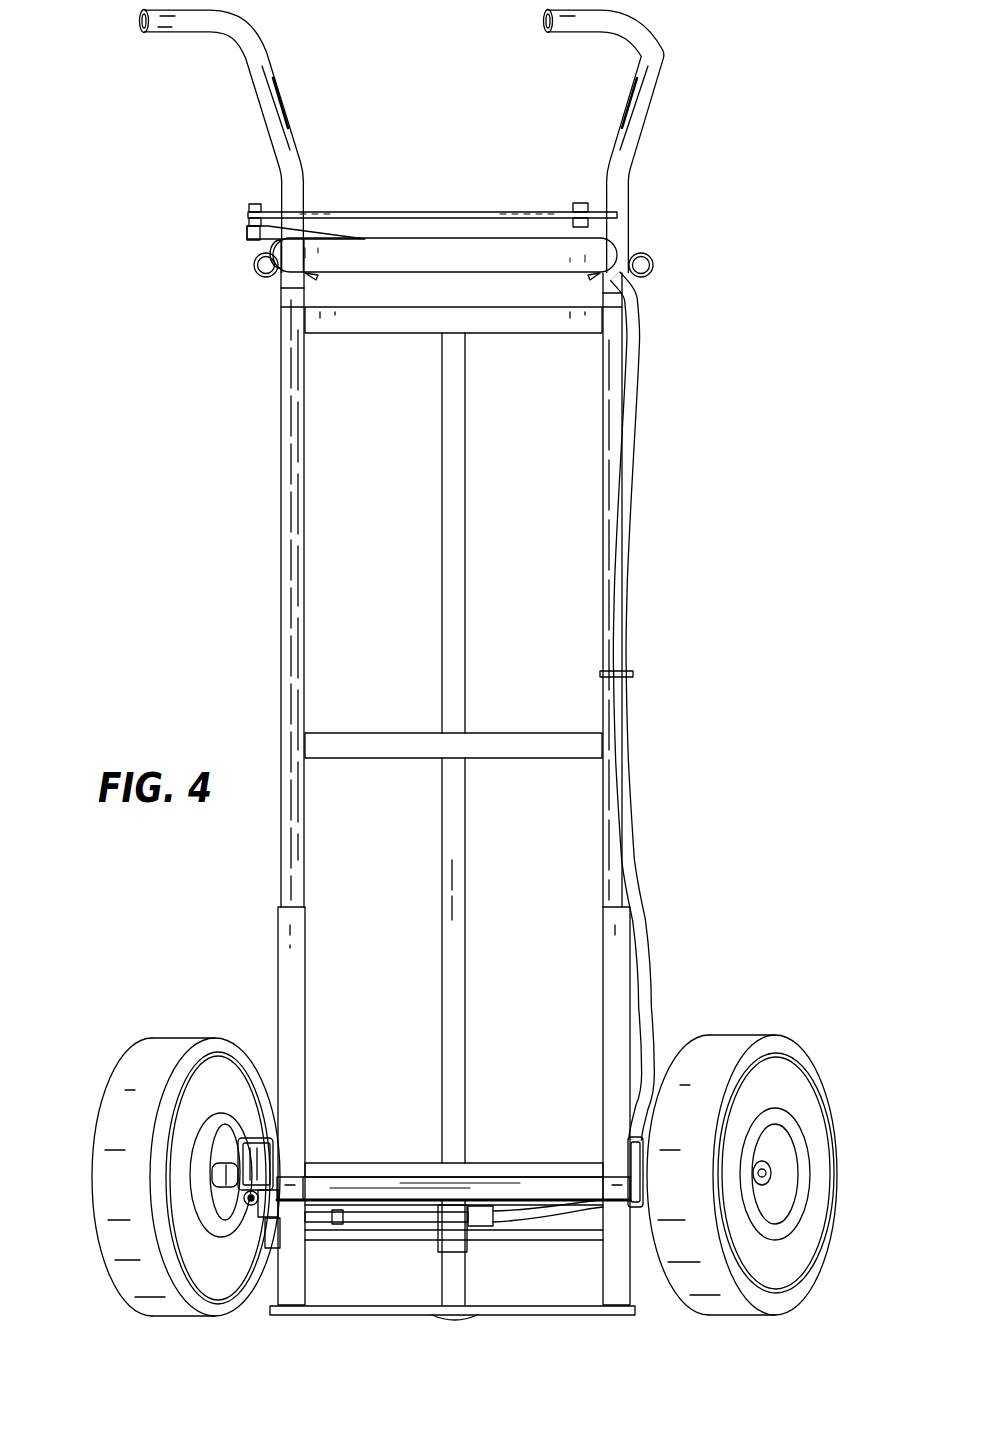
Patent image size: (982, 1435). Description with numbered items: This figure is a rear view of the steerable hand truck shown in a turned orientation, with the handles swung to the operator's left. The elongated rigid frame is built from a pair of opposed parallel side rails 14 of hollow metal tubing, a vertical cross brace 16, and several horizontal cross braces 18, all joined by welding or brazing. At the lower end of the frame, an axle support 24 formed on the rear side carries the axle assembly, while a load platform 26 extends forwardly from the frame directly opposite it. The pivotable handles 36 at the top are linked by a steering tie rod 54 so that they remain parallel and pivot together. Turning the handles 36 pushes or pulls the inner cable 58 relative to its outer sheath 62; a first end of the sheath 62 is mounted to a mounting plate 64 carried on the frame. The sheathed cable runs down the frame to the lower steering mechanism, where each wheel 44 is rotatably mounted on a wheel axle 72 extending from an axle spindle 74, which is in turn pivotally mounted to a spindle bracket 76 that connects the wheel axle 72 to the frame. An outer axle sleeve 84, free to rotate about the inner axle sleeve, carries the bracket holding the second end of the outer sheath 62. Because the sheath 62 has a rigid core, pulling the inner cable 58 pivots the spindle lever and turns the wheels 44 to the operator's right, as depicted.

The side rails 14 is at (610, 400).
The vertical cross brace 16 is at (458, 605).
The horizontal cross braces 18 is at (366, 325).
The axle support 24 is at (296, 1006).
The load platform 26 is at (368, 1302).
The handles 36 is at (267, 133).
The wheels 44 is at (796, 1083).
The steering tie rod 54 is at (362, 208).
The inner cable 58 is at (350, 1218).
The outer sheath 62 is at (652, 1010).
The mounting plate 64 is at (472, 258).
The wheel axle 72 is at (218, 1188).
The axle spindle 74 is at (238, 1138).
The spindle bracket 76 is at (273, 1143).
The outer axle sleeve 84 is at (373, 1185).